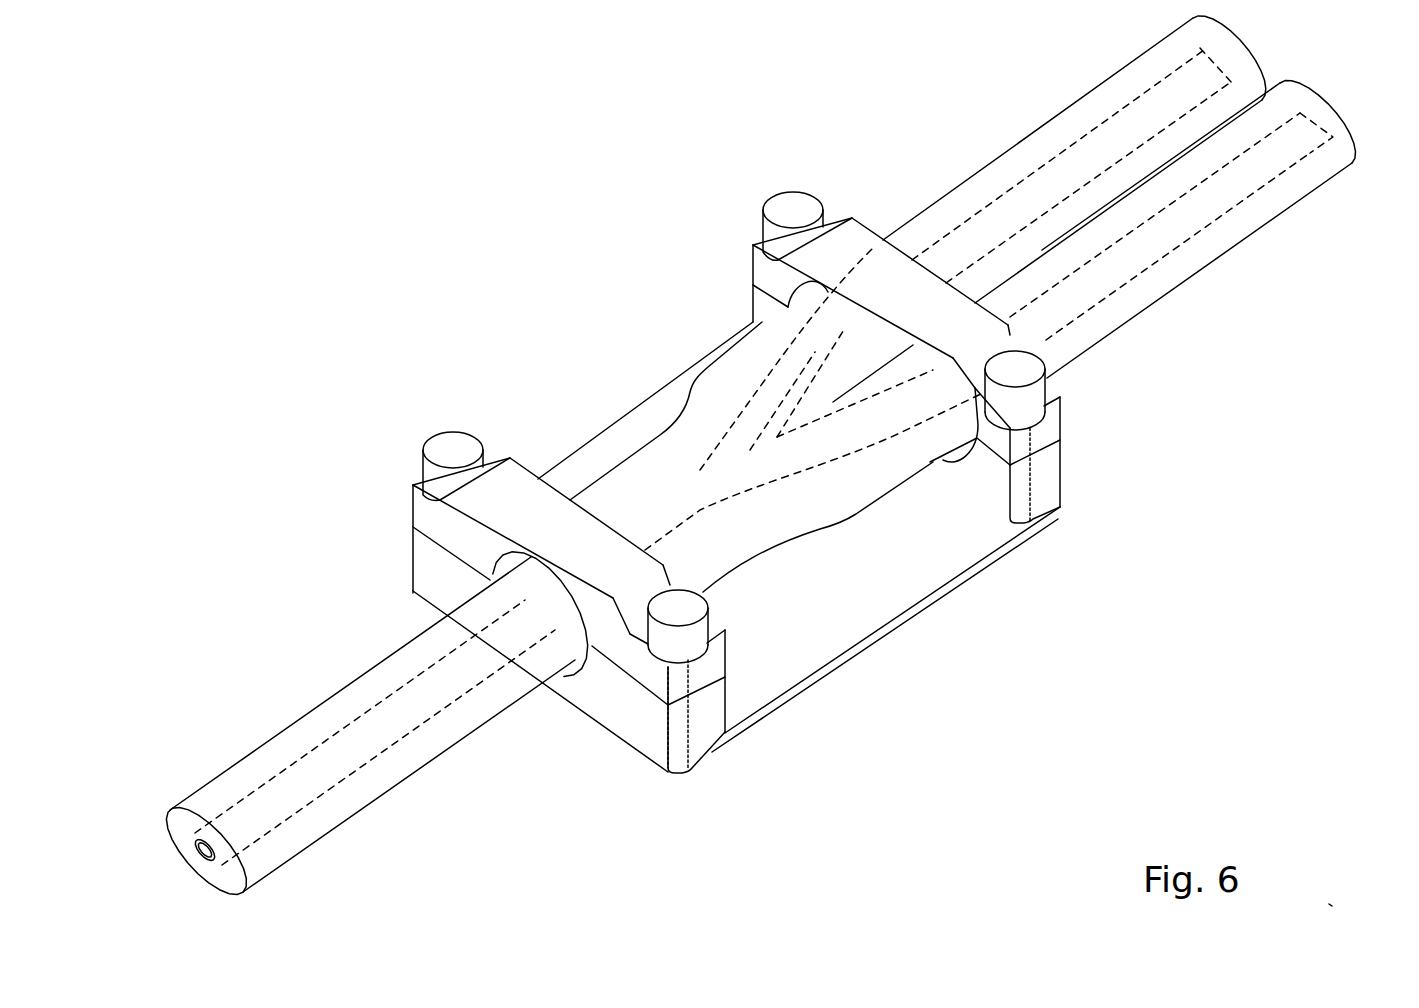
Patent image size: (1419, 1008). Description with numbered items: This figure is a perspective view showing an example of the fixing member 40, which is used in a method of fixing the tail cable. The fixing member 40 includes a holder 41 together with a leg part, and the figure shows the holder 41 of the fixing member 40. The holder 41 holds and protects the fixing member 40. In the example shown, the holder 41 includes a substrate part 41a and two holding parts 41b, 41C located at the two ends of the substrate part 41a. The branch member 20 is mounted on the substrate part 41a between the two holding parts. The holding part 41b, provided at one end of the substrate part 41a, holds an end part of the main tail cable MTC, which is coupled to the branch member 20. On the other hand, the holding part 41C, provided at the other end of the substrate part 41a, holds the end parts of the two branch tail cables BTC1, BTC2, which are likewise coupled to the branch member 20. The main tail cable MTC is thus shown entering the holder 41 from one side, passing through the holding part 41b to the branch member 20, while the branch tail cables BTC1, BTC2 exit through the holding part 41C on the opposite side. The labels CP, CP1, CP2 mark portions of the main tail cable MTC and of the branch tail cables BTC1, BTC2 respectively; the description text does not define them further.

The branch member 20 is at (716, 470).
The fixing member 40 is at (788, 508).
The holder 41 is at (788, 508).
The substrate part 41a is at (882, 630).
The holding part 41b is at (705, 743).
The holding part 41C is at (956, 359).
The main tail cable MTC is at (345, 660).
The cable part of main trunk cable CP is at (298, 777).
The branch tail cable BTC1 is at (1028, 88).
The cable part of first branch cable CP1 is at (973, 237).
The branch tail cable BTC2 is at (1255, 283).
The cable part of second branch cable CP2 is at (1085, 291).